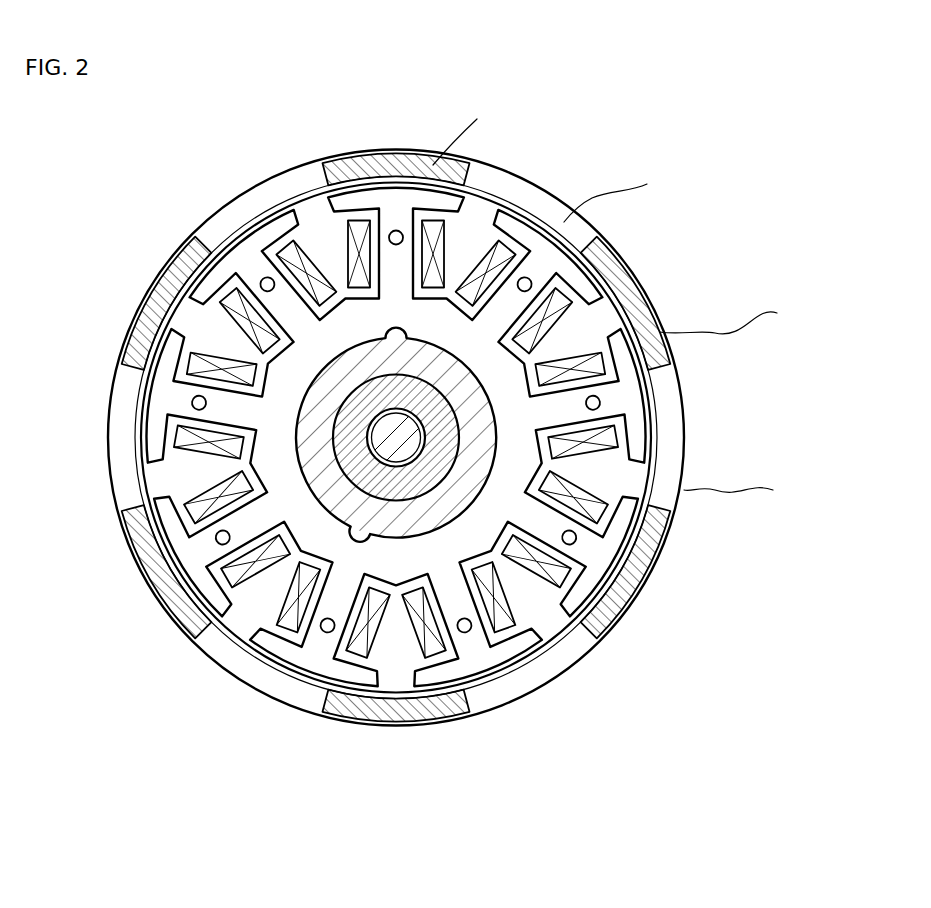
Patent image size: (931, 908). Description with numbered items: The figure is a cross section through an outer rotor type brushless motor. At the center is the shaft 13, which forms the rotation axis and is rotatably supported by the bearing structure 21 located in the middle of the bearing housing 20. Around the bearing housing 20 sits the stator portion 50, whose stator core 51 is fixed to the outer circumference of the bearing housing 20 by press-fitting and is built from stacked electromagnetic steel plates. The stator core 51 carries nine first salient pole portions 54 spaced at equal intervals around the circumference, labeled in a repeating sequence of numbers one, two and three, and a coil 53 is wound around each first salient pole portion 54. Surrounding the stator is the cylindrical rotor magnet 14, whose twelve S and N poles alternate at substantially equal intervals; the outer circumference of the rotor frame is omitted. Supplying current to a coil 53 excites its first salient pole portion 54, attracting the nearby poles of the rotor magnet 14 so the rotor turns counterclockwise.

The shaft 13 is at (382, 450).
The rotor magnet 14 is at (666, 591).
The bearing housing 20 is at (338, 380).
The bearing structure 21 is at (358, 424).
The stator portion 50 is at (396, 522).
The stator core 51 is at (315, 530).
The coil 53 is at (417, 640).
The first salient pole portion 54 is at (240, 803).